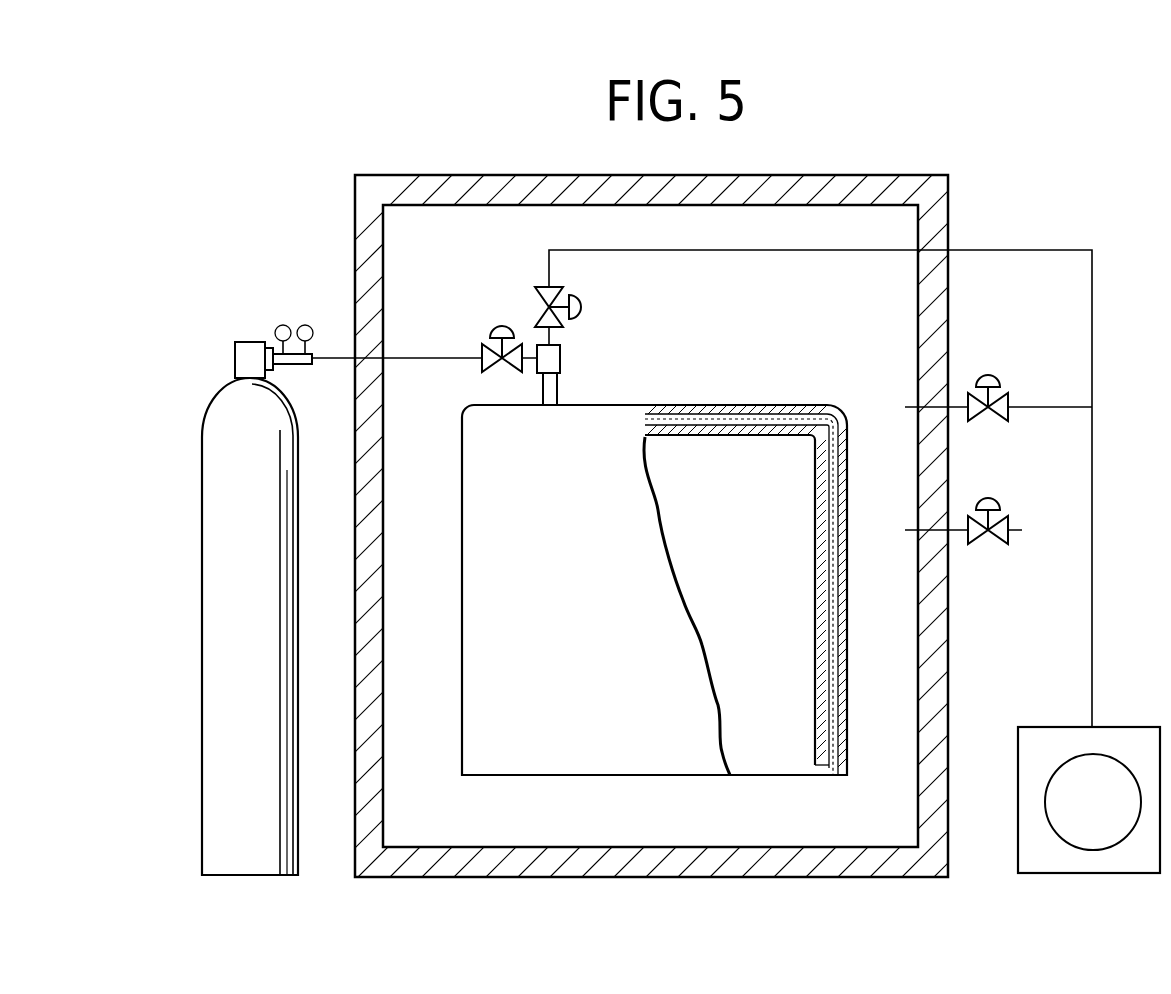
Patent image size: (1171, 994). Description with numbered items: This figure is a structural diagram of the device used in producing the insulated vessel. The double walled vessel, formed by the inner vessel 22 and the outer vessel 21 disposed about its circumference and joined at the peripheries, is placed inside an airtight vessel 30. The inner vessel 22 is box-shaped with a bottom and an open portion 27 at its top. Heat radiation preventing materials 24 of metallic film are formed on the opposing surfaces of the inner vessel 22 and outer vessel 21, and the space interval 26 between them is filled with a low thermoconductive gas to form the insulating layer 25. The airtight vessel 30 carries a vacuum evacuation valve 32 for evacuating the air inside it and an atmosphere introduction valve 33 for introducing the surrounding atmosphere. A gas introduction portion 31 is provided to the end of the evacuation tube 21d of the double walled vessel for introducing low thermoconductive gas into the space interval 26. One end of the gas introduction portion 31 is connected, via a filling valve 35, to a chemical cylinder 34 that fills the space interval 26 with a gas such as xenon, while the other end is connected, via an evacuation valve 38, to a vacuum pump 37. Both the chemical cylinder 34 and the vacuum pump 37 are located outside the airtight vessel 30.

The outer vessel 21 is at (739, 401).
The evacuation tube 21d is at (562, 390).
The inner vessel 22 is at (746, 439).
The heat radiation preventing material 24 is at (826, 513).
The insulating layer 25 is at (824, 420).
The space interval 26 is at (834, 600).
The open portion 27 is at (792, 777).
The airtight vessel 30 is at (797, 880).
The gas introduction portion 31 is at (564, 355).
The vacuum evacuation valve 32 is at (1010, 400).
The atmosphere introduction valve 33 is at (1010, 523).
The chemical cylinder 34 is at (232, 400).
The filling valve 35 is at (500, 343).
The vacuum pump 37 is at (1040, 727).
The evacuation valve 38 is at (543, 298).